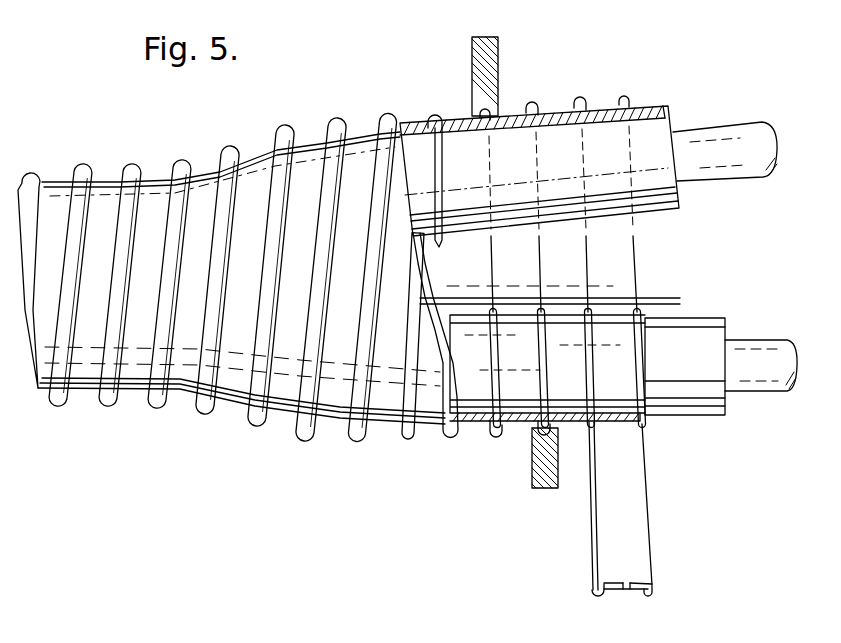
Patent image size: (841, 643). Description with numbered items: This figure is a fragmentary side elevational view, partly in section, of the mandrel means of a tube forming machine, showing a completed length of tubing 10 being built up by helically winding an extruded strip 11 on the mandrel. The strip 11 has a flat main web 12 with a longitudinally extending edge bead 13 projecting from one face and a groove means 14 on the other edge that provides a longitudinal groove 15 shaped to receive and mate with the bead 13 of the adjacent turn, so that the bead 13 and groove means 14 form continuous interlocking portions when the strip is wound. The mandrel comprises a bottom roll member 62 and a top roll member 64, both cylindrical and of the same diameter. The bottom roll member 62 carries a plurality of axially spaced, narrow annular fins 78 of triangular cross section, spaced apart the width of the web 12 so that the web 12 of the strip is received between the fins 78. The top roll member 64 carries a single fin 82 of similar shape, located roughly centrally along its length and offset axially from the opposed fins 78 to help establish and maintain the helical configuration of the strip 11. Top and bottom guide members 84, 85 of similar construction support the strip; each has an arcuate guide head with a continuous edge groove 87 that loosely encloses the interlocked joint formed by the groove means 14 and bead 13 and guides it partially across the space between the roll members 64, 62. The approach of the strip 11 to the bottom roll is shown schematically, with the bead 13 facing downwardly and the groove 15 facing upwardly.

The tubing 10 is at (68, 177).
The extruded strip 11 is at (652, 512).
The flat main web 12 is at (628, 590).
The longitudinally extending edge bead portion 13 is at (626, 99).
The longitudinally extending groove means 14 is at (570, 87).
The longitudinally extending groove 15 is at (592, 590).
The bottom roll member 62 is at (726, 418).
The top roll member 64 is at (664, 110).
The fins 78 is at (497, 366).
The fin 82 is at (438, 189).
The top guide member 84 is at (500, 68).
The bottom guide member 85 is at (533, 467).
The continuous edge groove 87 is at (530, 268).